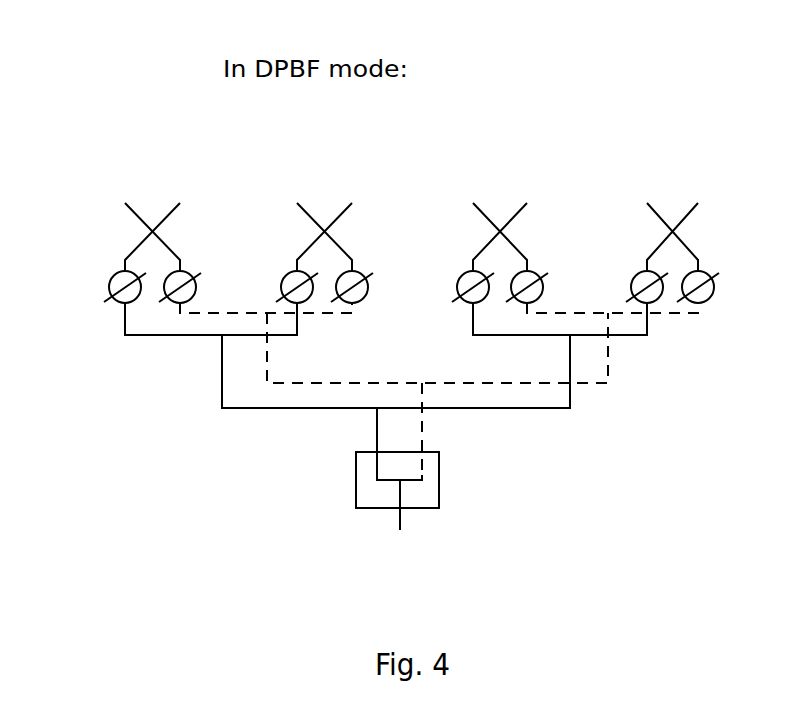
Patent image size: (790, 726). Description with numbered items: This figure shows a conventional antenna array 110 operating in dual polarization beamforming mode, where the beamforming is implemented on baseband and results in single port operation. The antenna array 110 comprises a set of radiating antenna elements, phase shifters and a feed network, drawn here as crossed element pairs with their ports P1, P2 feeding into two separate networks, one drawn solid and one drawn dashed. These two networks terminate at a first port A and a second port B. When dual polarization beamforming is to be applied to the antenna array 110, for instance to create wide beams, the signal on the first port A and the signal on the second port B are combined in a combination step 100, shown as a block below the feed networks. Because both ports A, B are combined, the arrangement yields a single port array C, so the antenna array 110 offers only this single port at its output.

The antenna array 110 is at (60, 102).
The combination step 100 is at (445, 487).
The first polarization antenna port P1 is at (150, 237).
The second polarization antenna port P2 is at (154, 237).
The first port A is at (386, 391).
The second port B is at (439, 387).
The single port array C is at (395, 521).